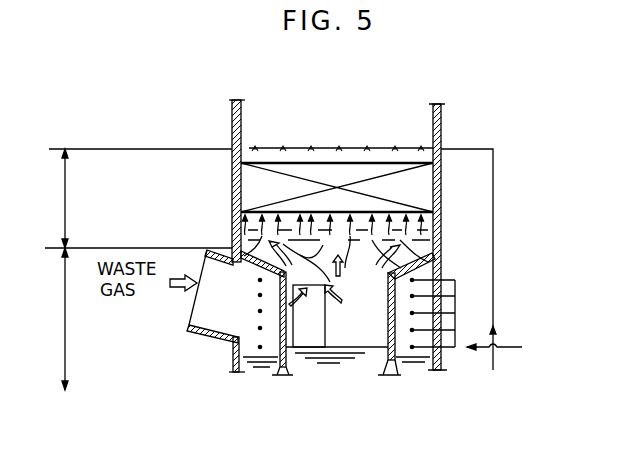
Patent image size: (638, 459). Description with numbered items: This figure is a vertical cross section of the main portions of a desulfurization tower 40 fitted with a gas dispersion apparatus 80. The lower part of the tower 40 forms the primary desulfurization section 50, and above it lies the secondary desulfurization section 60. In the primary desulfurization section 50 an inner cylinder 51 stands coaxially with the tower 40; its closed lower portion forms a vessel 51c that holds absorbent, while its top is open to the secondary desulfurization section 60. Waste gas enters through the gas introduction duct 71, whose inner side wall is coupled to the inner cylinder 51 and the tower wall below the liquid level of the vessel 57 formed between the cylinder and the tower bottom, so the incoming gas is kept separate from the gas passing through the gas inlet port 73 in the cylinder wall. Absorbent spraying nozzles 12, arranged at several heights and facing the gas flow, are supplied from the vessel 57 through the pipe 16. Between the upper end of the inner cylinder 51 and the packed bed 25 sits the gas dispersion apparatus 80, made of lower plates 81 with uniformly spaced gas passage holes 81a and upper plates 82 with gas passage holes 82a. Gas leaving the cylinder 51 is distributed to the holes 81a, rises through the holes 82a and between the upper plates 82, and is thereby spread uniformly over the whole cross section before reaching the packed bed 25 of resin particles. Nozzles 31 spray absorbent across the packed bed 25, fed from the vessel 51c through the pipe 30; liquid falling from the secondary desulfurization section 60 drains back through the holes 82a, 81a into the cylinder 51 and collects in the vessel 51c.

The desulfurization tower 40 is at (213, 133).
The nozzles 31 is at (384, 150).
The packed bed 25 is at (257, 186).
The upper plates 82 is at (410, 223).
The gas passage holes 82a is at (352, 225).
The lower plates 81 is at (437, 240).
The gas passage holes 81a is at (340, 300).
The gas dispersion apparatus 80 is at (417, 229).
The inner cylinder 51 is at (386, 306).
The vessel 51c is at (310, 363).
The pipe 30 is at (493, 287).
The pipe 16 is at (507, 348).
The secondary desulfurization section 60 is at (134, 198).
The primary desulfurization section 50 is at (52, 319).
The gas introduction duct 71 is at (196, 311).
The vessel 57 is at (267, 370).
The gas inlet port 73 is at (313, 332).
The absorbent spraying nozzles 12 is at (413, 350).